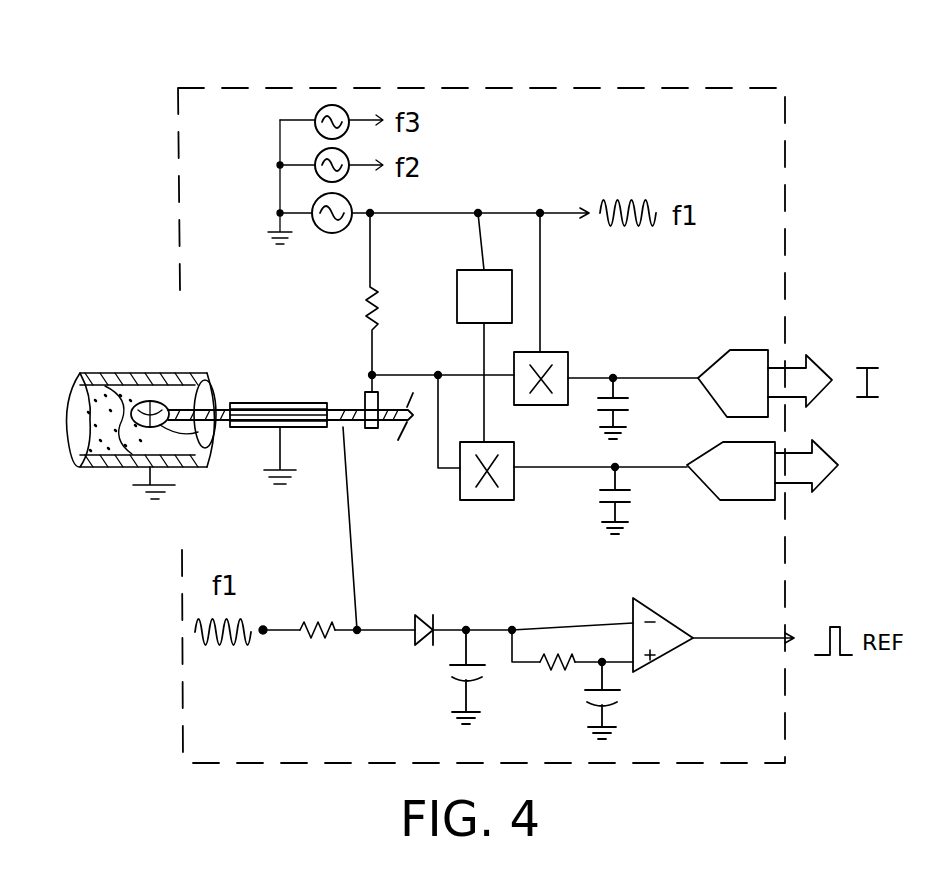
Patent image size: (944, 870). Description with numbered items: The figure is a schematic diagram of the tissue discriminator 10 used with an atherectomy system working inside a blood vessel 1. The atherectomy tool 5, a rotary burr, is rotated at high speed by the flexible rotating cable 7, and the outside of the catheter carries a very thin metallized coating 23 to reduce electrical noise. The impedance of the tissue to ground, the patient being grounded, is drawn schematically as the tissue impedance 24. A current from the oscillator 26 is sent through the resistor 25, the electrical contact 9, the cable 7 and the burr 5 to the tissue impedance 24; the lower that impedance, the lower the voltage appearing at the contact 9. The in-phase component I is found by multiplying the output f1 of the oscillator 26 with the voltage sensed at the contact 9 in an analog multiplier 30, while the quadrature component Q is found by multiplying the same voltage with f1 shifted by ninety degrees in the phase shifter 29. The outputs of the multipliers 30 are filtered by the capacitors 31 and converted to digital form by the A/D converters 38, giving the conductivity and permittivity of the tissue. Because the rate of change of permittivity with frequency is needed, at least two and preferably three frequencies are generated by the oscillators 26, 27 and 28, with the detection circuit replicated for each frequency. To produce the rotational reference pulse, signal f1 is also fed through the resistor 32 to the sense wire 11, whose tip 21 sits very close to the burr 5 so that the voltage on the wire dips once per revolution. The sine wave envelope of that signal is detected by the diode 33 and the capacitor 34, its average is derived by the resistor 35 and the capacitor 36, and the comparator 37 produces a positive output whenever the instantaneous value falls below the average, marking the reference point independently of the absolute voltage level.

The blood vessel 1 is at (135, 372).
The atherectomy tool 5 is at (160, 401).
The flexible rotating cable 7 is at (353, 405).
The electrical contact 9 is at (372, 433).
The discriminator 10 is at (510, 78).
The sense wire 11 is at (355, 552).
The tip 21 is at (172, 423).
The thin coating 23 is at (293, 400).
The tissue impedance 24 is at (93, 460).
The resistor 25 is at (358, 290).
The oscillator 26 is at (305, 200).
The oscillator 27 is at (305, 158).
The oscillator 28 is at (310, 108).
The phase shifter 29 is at (520, 280).
The analog multiplier 30 is at (585, 352).
The capacitor 31 is at (632, 405).
The resistor 32 is at (318, 652).
The diode 33 is at (420, 650).
The capacitor 34 is at (497, 680).
The resistor 35 is at (560, 648).
The capacitor 36 is at (635, 698).
The comparator 37 is at (675, 655).
The A/D converter 38 is at (755, 347).